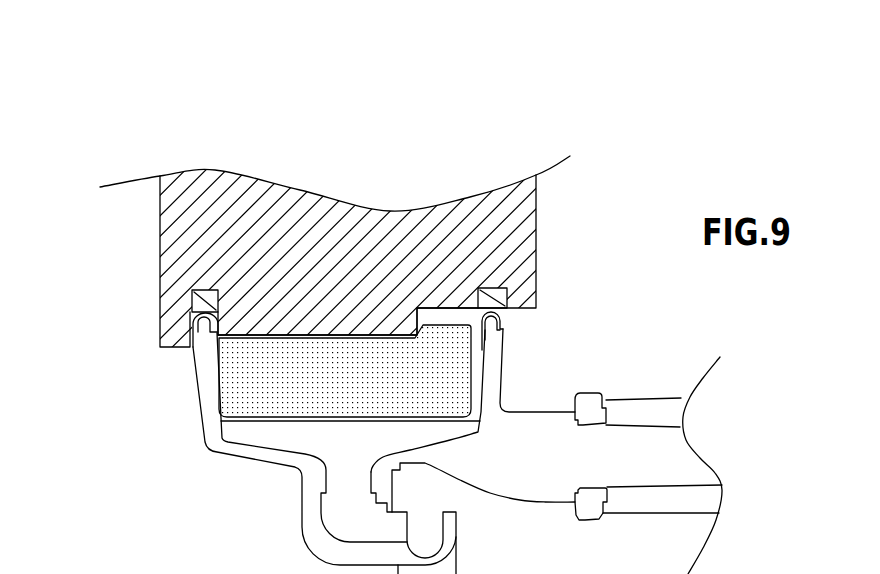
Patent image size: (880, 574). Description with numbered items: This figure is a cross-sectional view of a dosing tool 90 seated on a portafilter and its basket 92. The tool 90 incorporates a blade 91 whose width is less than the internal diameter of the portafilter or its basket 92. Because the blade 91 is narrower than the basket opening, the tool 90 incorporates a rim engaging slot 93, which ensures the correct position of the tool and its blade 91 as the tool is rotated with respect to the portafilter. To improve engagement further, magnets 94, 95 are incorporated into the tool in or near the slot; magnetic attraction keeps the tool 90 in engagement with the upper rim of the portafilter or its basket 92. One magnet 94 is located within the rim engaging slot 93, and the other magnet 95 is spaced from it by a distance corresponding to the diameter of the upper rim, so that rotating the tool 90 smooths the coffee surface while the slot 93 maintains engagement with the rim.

The dosing tool 90 is at (489, 198).
The blade 91 is at (310, 328).
The basket 92 is at (503, 313).
The rim engaging slot 93 is at (192, 320).
The magnet 94 is at (207, 283).
The magnet 95 is at (503, 288).